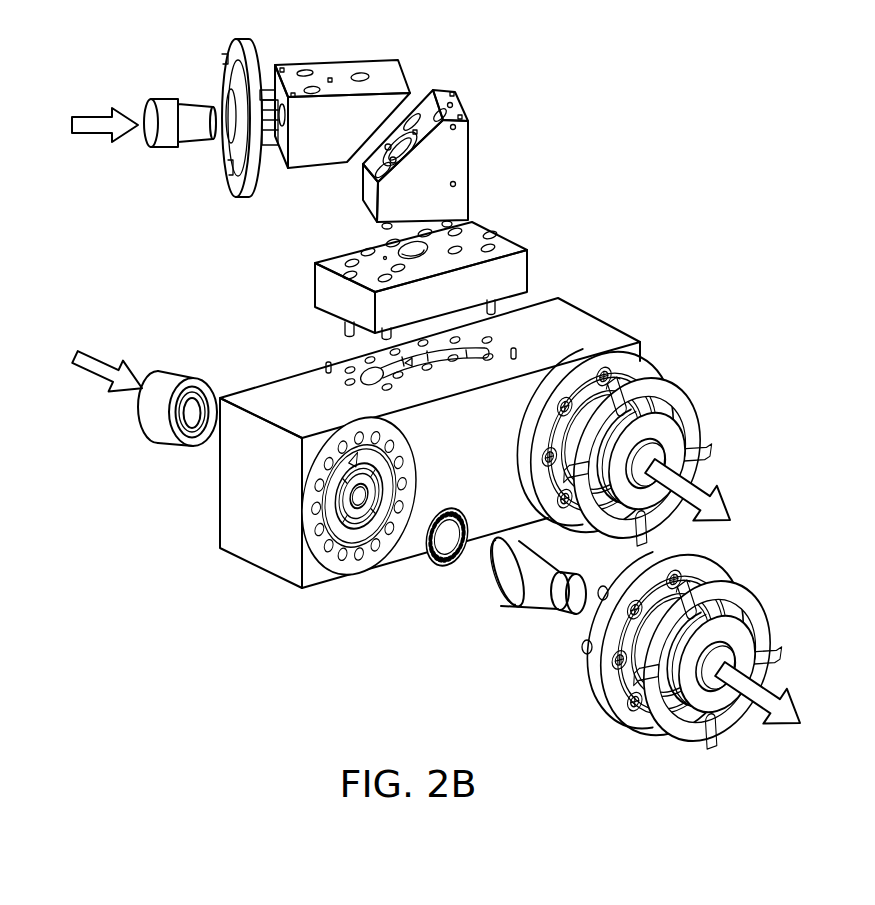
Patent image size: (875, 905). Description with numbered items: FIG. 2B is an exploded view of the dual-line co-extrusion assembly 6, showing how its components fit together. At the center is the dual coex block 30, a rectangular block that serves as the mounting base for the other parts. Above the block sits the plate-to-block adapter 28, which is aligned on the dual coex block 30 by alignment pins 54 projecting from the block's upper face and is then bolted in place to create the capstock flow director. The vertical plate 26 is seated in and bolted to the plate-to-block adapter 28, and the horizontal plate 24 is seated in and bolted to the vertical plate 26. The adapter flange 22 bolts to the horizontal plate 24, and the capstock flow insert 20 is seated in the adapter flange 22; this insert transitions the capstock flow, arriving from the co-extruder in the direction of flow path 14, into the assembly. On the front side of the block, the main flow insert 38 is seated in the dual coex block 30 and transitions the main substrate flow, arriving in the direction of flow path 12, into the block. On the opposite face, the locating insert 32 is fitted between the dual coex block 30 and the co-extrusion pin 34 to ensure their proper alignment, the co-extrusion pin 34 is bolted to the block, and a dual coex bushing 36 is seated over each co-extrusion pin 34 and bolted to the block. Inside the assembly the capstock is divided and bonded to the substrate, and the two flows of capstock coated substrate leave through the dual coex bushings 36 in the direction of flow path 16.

The dual-line co-extrusion assembly 6 is at (246, 675).
The flow path 12 is at (110, 390).
The flow path 14 is at (104, 134).
The flow path 16 is at (727, 497).
The capstock flow insert 20 is at (162, 100).
The adapter flange 22 is at (247, 42).
The horizontal plate 24 is at (400, 62).
The vertical plate 26 is at (472, 121).
The plate-to-block adapter 28 is at (517, 247).
The dual coex block 30 is at (242, 552).
The locating insert 32 is at (428, 558).
The co-extrusion pin 34 is at (500, 601).
The dual coex bushing 36 is at (694, 406).
The main flow insert 38 is at (167, 367).
The alignment pins 54 is at (325, 364).